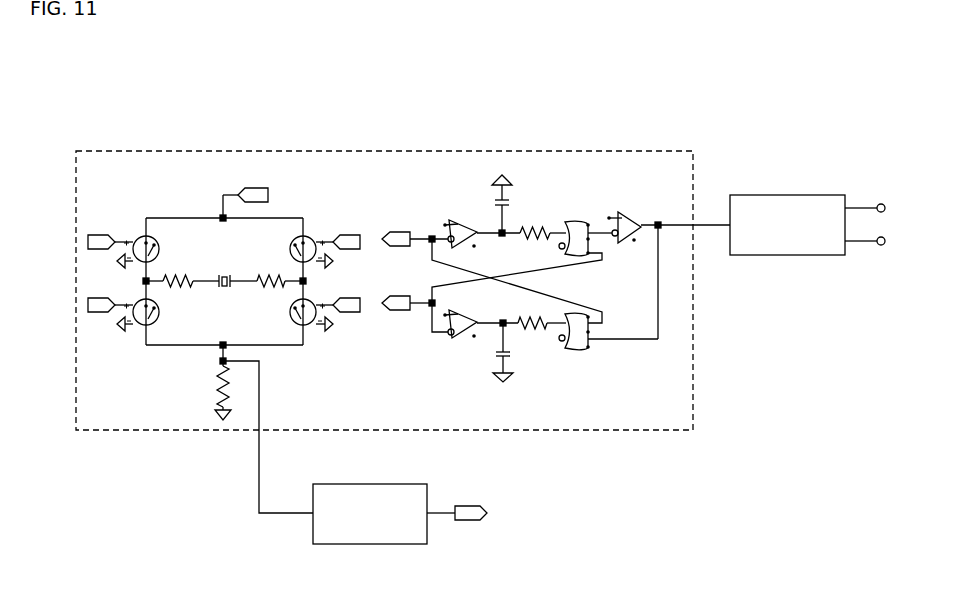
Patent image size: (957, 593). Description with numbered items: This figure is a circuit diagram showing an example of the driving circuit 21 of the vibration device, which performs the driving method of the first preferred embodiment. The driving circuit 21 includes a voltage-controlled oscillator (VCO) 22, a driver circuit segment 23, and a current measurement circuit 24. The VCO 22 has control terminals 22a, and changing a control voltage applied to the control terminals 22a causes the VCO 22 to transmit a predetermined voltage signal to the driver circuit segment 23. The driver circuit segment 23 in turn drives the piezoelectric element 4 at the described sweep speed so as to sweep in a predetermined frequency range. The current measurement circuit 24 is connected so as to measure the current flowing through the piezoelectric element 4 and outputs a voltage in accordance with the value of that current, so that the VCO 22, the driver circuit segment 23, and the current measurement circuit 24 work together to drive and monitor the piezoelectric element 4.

The driving circuit 21 is at (108, 129).
The driver circuit segment 23 is at (389, 150).
The piezoelectric element 4 is at (224, 288).
The voltage-controlled oscillator (VCO) 22 is at (775, 257).
The control terminals 22a is at (881, 246).
The current measurement circuit 24 is at (370, 546).